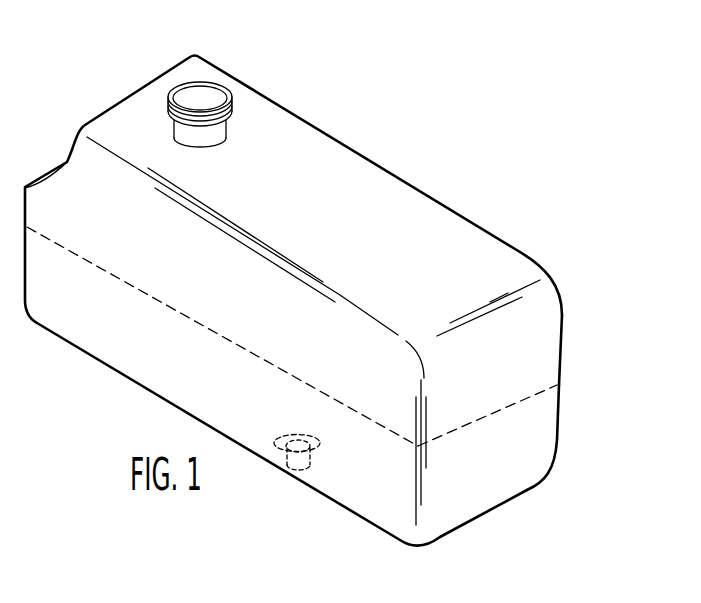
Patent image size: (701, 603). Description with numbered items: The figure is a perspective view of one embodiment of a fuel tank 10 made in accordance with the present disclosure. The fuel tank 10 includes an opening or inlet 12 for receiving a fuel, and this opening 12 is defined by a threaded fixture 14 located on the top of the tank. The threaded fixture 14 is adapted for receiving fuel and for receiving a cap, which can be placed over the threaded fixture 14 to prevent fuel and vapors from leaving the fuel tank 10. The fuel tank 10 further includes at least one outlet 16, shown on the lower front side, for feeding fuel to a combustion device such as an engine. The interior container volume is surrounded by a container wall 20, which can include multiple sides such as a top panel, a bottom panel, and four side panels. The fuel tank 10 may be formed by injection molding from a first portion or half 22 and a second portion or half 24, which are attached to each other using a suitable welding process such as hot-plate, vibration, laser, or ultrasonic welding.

The fuel tank 10 is at (455, 138).
The opening 12 is at (193, 90).
The threaded fixture 14 is at (230, 122).
The outlet 16 is at (320, 443).
The container wall 20 is at (490, 250).
The first portion 22 is at (557, 325).
The second portion 24 is at (555, 440).